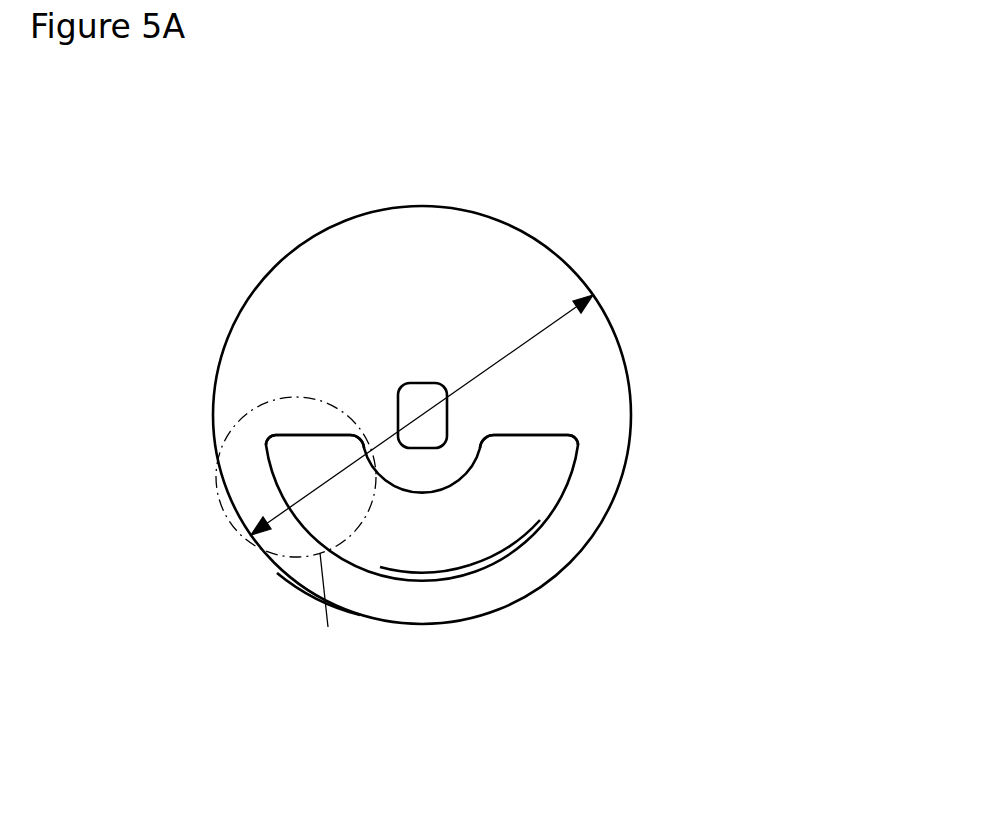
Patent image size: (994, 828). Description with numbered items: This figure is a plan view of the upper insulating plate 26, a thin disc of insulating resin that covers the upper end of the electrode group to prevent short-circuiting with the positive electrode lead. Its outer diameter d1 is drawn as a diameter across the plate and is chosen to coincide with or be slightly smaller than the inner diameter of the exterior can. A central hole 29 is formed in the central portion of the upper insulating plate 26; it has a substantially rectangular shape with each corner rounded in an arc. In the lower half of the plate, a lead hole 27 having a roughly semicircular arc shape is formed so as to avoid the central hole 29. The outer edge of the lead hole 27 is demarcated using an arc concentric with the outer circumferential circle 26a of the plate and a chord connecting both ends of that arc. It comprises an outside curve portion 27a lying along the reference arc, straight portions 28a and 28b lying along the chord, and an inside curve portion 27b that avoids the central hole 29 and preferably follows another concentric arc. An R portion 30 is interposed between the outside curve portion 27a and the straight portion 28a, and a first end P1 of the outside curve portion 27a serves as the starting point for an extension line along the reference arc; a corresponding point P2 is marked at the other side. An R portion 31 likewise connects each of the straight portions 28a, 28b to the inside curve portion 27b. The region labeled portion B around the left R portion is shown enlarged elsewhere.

The upper insulating plate 26 is at (565, 265).
The outer circumferential circle 26a is at (277, 573).
The lead hole 27 is at (489, 573).
The outside curve portion 27a is at (423, 573).
The inside curve portion 27b is at (457, 537).
The straight portion 28a is at (300, 435).
The straight portion 28b is at (540, 434).
The central hole 29 is at (426, 393).
The R portion 30 is at (267, 407).
The R portion 31 is at (347, 437).
The outer diameter d1 is at (512, 352).
The first end P1 is at (266, 450).
The second point P2 is at (578, 446).
The portion B is at (328, 627).